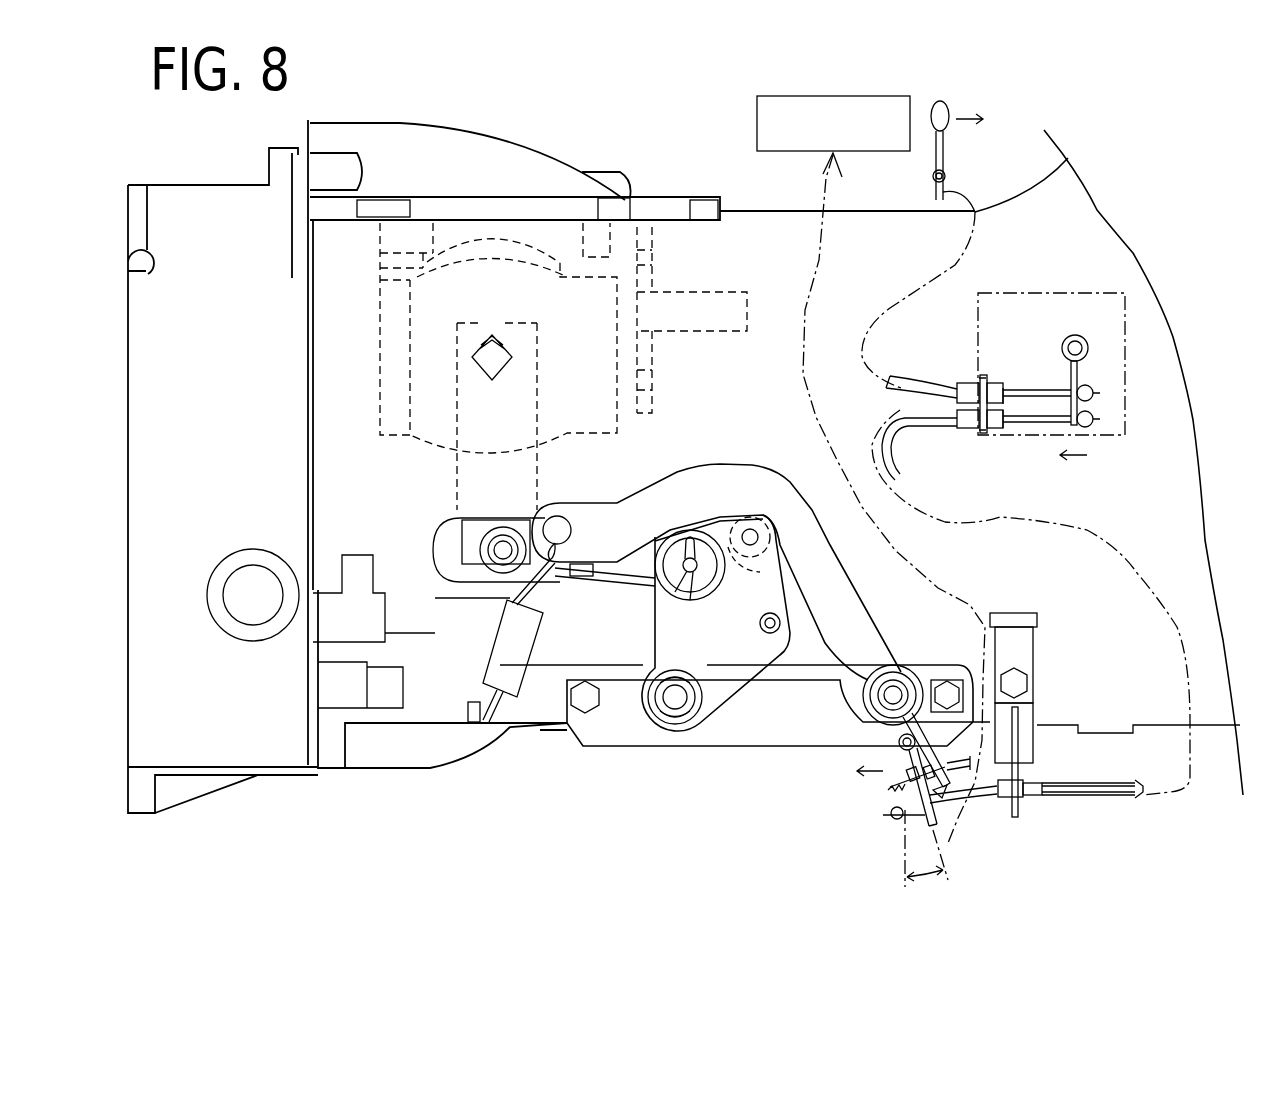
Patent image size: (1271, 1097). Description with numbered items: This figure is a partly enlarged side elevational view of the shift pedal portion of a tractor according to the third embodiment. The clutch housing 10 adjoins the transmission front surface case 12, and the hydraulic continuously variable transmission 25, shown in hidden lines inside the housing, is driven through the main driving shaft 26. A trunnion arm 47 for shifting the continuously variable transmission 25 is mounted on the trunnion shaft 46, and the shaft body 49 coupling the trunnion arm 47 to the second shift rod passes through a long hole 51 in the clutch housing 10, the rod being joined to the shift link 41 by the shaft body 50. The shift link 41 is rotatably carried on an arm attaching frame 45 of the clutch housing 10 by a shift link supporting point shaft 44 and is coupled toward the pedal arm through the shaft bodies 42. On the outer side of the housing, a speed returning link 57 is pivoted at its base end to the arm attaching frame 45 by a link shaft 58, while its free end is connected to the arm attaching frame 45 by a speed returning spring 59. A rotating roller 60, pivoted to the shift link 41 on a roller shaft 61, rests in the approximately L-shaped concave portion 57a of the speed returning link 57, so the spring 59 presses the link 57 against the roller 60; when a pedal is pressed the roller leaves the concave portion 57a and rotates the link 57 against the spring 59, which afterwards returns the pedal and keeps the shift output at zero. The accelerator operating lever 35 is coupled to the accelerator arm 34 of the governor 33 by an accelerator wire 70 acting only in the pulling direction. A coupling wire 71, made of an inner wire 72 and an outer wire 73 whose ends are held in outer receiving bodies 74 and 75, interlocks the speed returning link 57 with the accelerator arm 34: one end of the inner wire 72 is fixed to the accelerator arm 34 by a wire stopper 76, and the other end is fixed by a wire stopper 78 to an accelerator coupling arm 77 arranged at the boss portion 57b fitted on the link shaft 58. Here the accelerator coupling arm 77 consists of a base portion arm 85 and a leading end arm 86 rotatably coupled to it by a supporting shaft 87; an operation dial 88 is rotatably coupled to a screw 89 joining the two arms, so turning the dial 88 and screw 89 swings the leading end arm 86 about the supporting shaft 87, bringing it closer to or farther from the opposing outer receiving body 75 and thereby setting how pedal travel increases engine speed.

The clutch housing 10 is at (766, 228).
The transmission front surface case 12 is at (212, 215).
The hydraulic continuously variable transmission 25 is at (573, 443).
The main driving shaft 26 is at (746, 306).
The governor 33 is at (1013, 293).
The accelerator arm 34 is at (1077, 382).
The accelerator operating lever 35 is at (940, 103).
The shift link 41 is at (720, 700).
The shaft body 42 is at (763, 633).
The shift link supporting point shaft 44 is at (675, 702).
The arm attaching frame 45 is at (537, 712).
The trunnion shaft 46 is at (500, 383).
The trunnion arm 47 is at (467, 530).
The shaft body 49 is at (491, 532).
The shaft body 50 is at (705, 585).
The long hole 51 is at (433, 547).
The speed returning link 57 is at (727, 456).
The concave portion 57a is at (760, 513).
The boss portion 57b is at (920, 670).
The link shaft 58 is at (892, 690).
The speed returning spring 59 is at (503, 667).
The rotating roller 60 is at (758, 556).
The roller shaft 61 is at (760, 537).
The accelerator wire 70 is at (1037, 390).
The coupling wire 71 is at (1125, 785).
The inner wire 72 is at (1020, 435).
The outer wire 73 is at (920, 430).
The outer receiving body 74 is at (975, 440).
The outer receiving body 75 is at (1023, 763).
The wire stopper 76 is at (1093, 427).
The accelerator coupling arm 77 is at (973, 810).
The wire stopper 78 is at (911, 855).
The base portion arm 85 is at (880, 732).
The leading end arm 86 is at (937, 817).
The supporting shaft 87 is at (905, 752).
The operation dial 88 is at (767, 142).
The screw 89 is at (885, 813).